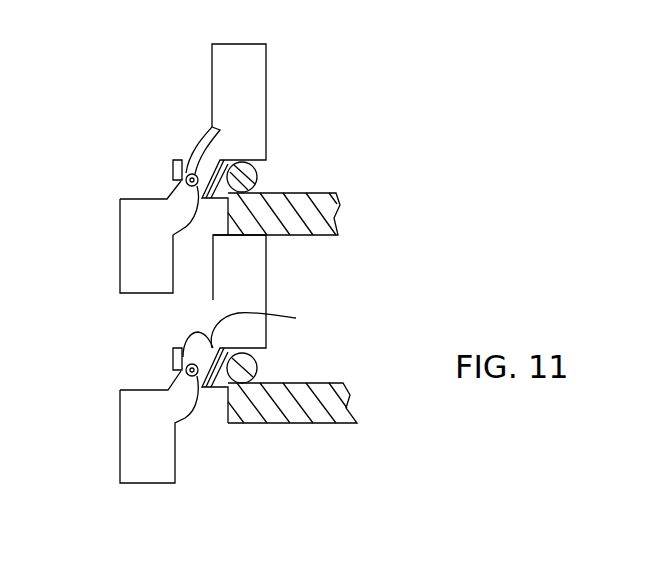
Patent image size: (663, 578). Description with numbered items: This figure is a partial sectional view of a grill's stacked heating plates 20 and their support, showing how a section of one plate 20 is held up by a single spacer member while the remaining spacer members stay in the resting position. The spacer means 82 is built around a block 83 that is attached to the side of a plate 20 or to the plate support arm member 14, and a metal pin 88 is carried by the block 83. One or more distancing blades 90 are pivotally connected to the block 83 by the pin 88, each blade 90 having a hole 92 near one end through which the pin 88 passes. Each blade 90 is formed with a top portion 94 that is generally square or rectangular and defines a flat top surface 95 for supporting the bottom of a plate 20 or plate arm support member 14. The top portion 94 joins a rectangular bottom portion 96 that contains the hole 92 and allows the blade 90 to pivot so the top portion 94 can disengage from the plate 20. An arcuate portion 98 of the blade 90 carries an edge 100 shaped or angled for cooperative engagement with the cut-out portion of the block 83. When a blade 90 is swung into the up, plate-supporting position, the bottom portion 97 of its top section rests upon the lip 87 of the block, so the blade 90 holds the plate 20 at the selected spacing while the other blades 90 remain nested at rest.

The plate support arm member 14 is at (262, 195).
The plate 20 is at (333, 193).
The spacer means 82 is at (362, 263).
The block 83 is at (202, 198).
The lip 87 is at (256, 172).
The pin 88 is at (187, 177).
The blade 90 is at (272, 120).
The hole 92 is at (172, 368).
The top portion 94 is at (259, 89).
The flat top surface 95 is at (251, 44).
The bottom portion 96 is at (204, 133).
The bottom portion of the top section 97 is at (228, 162).
The arcuate portion 98 is at (194, 142).
The edge 100 is at (277, 327).